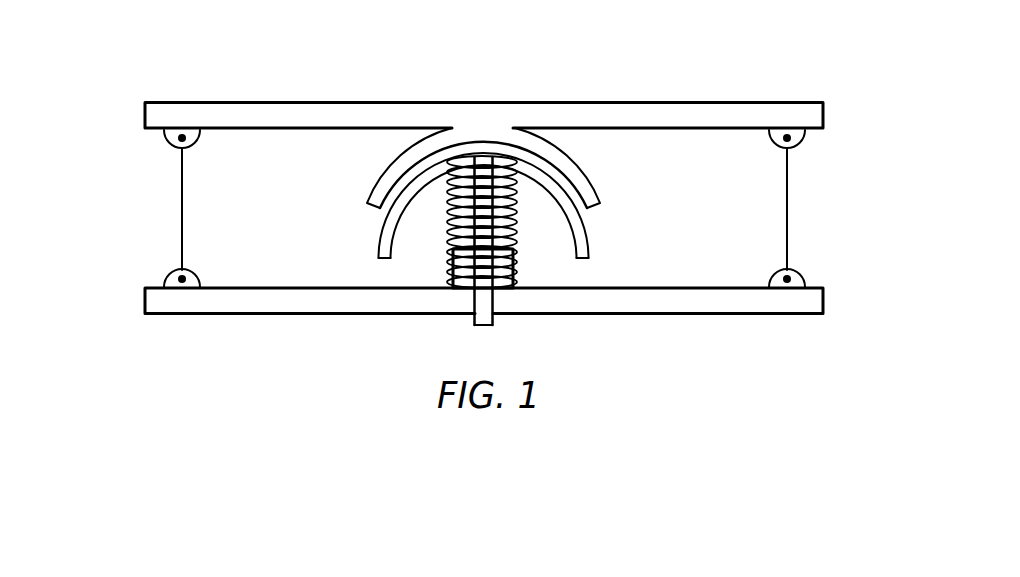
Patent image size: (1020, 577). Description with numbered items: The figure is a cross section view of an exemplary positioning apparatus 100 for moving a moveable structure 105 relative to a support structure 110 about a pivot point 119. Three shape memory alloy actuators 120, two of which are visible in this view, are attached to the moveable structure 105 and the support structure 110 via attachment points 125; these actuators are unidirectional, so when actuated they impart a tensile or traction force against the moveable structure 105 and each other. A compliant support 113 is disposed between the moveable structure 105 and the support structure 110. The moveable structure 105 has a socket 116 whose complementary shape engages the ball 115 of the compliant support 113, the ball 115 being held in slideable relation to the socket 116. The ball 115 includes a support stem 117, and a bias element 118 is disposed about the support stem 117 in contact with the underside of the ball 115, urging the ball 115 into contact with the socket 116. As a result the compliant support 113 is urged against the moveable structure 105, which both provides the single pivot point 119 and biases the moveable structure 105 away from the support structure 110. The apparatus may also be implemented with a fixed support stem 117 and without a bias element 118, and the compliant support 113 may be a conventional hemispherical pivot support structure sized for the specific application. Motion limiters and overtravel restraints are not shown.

The positioning apparatus 100 is at (600, 49).
The moveable structure 105 is at (745, 112).
The support structure 110 is at (740, 303).
The compliant support 113 is at (340, 214).
The ball 115 is at (588, 230).
The socket 116 is at (578, 170).
The support stem 117 is at (482, 323).
The bias element 118 is at (450, 228).
The pivot point 119 is at (482, 142).
The shape memory alloy actuator 120 is at (180, 220).
The attachment point 125 is at (168, 137).